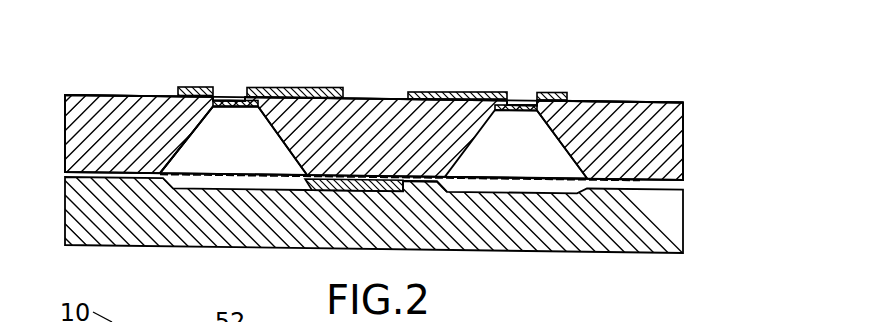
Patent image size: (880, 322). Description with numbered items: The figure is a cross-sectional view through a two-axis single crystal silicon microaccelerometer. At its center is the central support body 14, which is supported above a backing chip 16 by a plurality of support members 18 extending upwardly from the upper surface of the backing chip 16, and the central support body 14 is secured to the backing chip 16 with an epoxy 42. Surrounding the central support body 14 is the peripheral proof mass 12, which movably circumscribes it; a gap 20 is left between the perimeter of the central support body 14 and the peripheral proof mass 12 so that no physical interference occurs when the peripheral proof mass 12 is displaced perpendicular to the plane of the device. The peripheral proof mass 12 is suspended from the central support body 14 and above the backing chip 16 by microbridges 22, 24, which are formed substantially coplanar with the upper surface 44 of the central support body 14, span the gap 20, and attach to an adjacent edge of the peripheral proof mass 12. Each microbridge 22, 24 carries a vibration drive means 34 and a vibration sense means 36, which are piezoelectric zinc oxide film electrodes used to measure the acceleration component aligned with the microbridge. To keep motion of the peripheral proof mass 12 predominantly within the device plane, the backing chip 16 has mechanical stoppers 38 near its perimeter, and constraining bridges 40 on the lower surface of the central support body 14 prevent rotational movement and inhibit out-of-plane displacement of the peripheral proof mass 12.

The peripheral proof mass 12 is at (683, 103).
The central support body 14 is at (367, 118).
The backing chip 16 is at (668, 212).
The support members 18 is at (285, 172).
The gap 20 is at (200, 143).
The microbridge 22 is at (245, 100).
The microbridge 24 is at (513, 98).
The vibration drive means 34 is at (192, 87).
The vibration sense means 36 is at (312, 88).
The mechanical stoppers 38 is at (100, 180).
The constraining bridges 40 is at (222, 172).
The epoxy 42 is at (390, 190).
The upper surface 44 is at (632, 115).